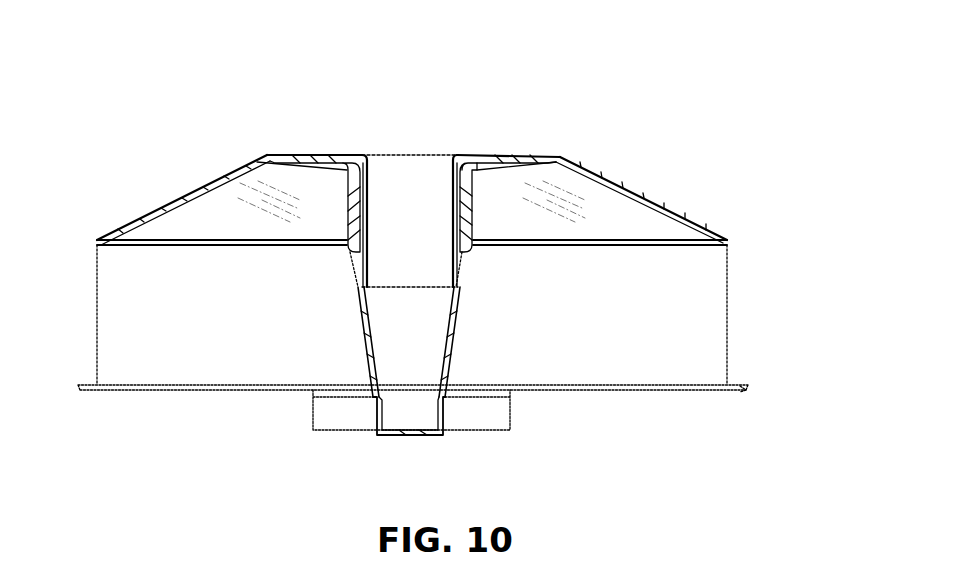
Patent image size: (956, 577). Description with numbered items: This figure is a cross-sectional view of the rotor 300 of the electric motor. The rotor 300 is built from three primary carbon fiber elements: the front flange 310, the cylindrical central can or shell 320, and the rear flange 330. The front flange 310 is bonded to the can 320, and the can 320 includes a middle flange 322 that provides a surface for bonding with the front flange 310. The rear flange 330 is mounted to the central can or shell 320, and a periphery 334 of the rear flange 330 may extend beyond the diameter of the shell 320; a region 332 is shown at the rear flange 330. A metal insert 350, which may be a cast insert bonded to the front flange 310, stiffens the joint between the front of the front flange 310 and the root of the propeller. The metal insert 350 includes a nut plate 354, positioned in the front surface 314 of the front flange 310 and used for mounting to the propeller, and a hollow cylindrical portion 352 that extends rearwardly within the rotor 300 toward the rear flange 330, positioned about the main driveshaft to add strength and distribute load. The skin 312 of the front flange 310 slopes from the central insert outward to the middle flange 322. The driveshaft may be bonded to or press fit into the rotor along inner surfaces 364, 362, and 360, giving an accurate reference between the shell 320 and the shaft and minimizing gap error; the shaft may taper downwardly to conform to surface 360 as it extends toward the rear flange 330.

The rotor 300 is at (181, 129).
The front flange 310 is at (623, 203).
The plateau skin 312 is at (558, 158).
The front surface of front flange 314 is at (277, 155).
The central can or shell 320 is at (710, 300).
The middle flange 322 is at (727, 237).
The rear flange 330 is at (638, 388).
The recess 332 is at (510, 415).
The periphery of rear flange 334 is at (737, 390).
The metal insert 350 is at (335, 126).
The hollow cylindrical portion 352 is at (368, 180).
The nut plate 354 is at (317, 157).
The inner surface 360 is at (360, 318).
The inner surface 362 is at (377, 412).
The inner surface 364 is at (370, 247).